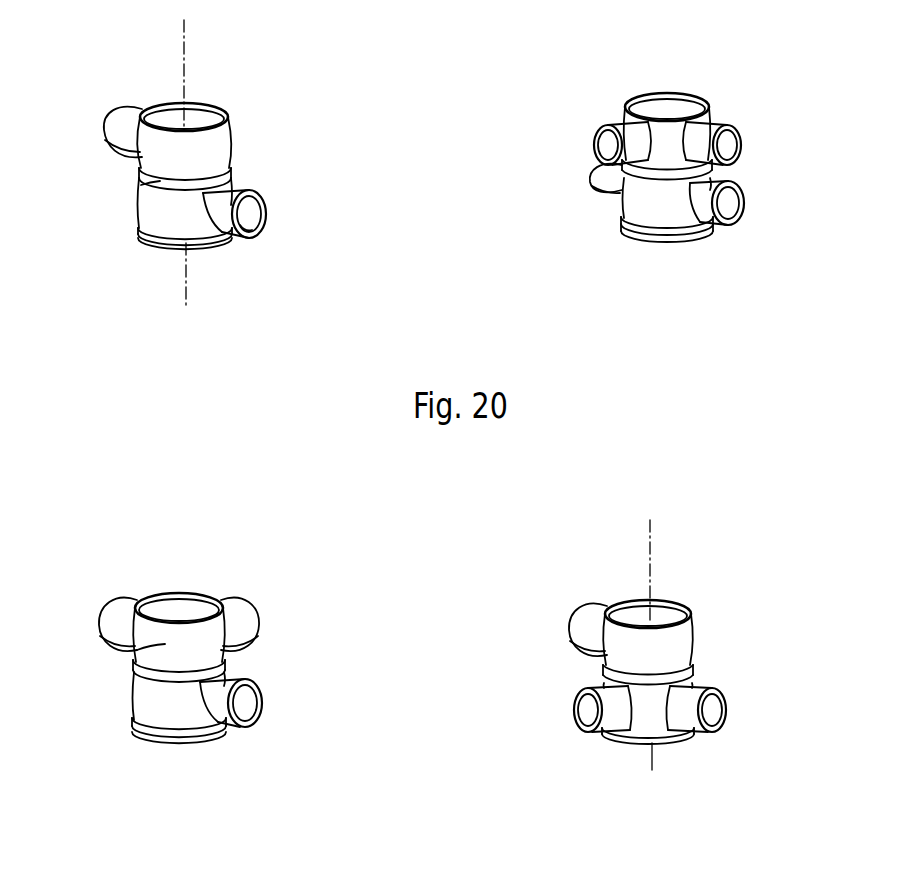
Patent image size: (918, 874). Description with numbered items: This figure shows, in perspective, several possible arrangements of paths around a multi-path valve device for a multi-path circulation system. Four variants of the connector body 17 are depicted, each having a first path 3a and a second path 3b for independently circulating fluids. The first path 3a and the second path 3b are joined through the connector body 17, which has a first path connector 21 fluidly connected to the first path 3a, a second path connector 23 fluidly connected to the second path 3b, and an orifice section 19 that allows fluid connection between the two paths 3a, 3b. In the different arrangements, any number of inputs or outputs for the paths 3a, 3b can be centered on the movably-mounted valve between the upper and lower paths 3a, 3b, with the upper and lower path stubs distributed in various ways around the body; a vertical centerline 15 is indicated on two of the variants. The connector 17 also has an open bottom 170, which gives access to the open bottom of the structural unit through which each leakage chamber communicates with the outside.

The first path 3a is at (128, 117).
The second path 3b is at (253, 237).
The longitudinal axis 15 is at (187, 82).
The connector body 17 is at (154, 213).
The orifice section 19 is at (192, 182).
The first path connector 21 is at (143, 645).
The second path connector 23 is at (162, 707).
The open bottom 170 is at (173, 247).